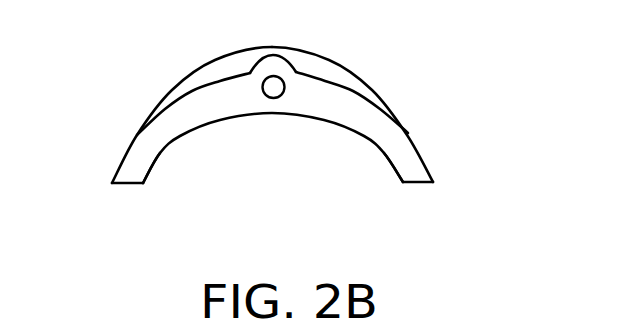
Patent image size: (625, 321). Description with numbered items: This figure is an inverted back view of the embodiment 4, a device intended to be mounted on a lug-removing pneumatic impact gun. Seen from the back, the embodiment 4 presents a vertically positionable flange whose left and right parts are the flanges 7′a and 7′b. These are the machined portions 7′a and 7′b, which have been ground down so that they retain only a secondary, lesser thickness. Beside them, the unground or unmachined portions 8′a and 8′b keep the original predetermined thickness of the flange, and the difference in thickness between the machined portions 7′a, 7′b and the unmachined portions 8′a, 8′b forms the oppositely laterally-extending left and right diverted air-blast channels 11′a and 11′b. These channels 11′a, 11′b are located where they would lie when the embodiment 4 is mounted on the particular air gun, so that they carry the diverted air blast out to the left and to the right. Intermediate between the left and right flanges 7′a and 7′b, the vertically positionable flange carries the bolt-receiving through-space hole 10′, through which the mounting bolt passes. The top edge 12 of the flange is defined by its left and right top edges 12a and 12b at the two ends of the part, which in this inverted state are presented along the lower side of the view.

The embodiment 4 is at (458, 85).
The machined portion (right flange) 7′a is at (377, 128).
The machined portion (left flange) 7′b is at (166, 125).
The unground (unmachined) portion 8′a is at (332, 60).
The unground (unmachined) portion 8′b is at (229, 50).
The bolt-receiving through-space hole 10′ is at (277, 85).
The diverted air-blast channel 11′a is at (305, 82).
The diverted air-blast channel 11′b is at (240, 84).
The top edge 12 is at (280, 116).
The top edge (left) 12a is at (390, 167).
The top edge (right) 12b is at (167, 153).